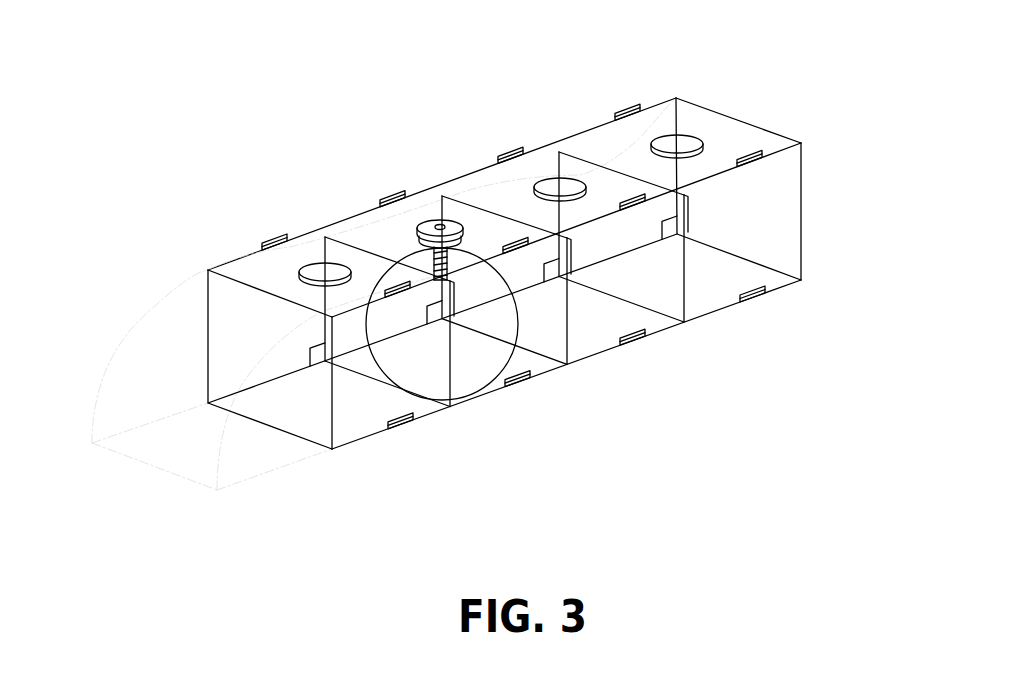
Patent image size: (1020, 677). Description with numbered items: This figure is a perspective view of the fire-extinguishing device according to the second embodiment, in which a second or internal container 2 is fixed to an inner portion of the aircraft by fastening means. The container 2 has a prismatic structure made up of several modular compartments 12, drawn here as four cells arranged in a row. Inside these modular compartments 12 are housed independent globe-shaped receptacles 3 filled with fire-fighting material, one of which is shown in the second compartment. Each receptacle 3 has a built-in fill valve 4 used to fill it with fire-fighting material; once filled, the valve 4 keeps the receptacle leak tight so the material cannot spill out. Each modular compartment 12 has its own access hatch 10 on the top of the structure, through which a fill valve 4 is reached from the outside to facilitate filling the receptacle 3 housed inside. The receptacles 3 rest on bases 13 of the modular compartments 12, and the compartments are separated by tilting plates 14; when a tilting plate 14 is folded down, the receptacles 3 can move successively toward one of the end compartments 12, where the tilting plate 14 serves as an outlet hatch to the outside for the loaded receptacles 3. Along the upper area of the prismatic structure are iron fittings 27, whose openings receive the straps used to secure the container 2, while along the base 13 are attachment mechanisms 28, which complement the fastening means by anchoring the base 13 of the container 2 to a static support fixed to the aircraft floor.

The second container 2 is at (279, 149).
The independent globe-shaped receptacle 3 is at (403, 259).
The fill valve 4 is at (439, 206).
The access hatch 10 is at (305, 275).
The modular compartment 12 is at (439, 425).
The base 13 is at (368, 415).
The tilting plate 14 is at (263, 333).
The iron fitting 27 is at (270, 233).
The attachment mechanism 28 is at (398, 437).